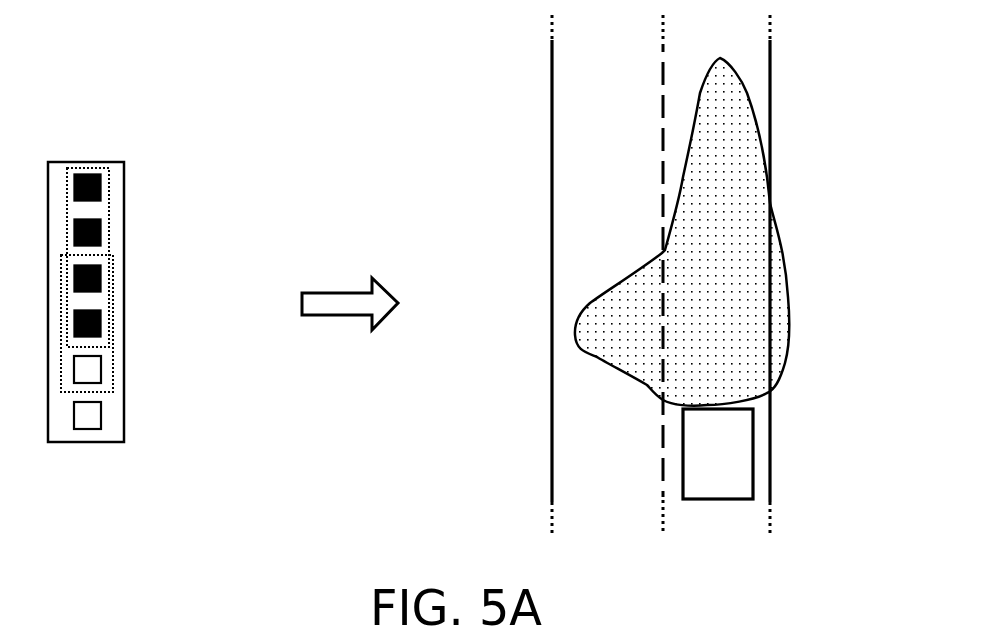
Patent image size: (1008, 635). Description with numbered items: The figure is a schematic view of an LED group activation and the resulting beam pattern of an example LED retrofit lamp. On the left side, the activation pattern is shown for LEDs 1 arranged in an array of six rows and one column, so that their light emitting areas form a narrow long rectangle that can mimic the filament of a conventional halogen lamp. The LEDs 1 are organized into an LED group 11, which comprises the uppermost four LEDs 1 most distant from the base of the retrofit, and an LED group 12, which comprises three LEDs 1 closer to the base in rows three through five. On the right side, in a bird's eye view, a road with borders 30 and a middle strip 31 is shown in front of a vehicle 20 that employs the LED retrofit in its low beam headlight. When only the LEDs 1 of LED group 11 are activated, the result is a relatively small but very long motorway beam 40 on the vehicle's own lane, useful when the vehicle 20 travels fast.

The LED 1 is at (102, 235).
The LED group 11 is at (88, 167).
The LED group 12 is at (115, 358).
The vehicle 20 is at (753, 454).
The borders 30 is at (770, 248).
The middle strip 31 is at (663, 117).
The motorway beam 40 is at (775, 230).